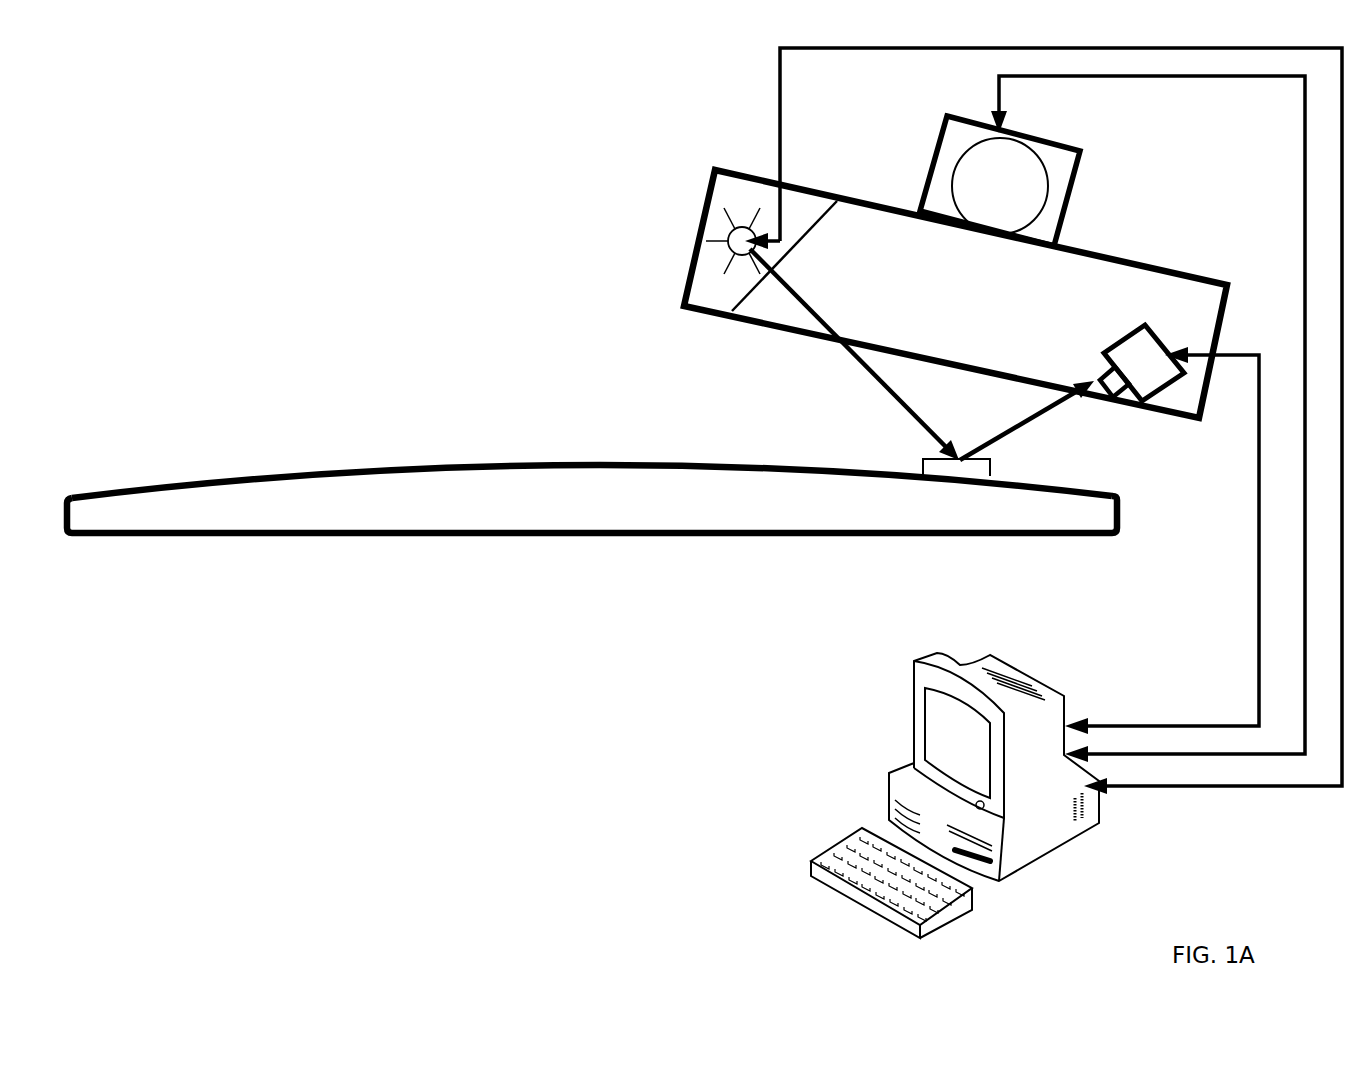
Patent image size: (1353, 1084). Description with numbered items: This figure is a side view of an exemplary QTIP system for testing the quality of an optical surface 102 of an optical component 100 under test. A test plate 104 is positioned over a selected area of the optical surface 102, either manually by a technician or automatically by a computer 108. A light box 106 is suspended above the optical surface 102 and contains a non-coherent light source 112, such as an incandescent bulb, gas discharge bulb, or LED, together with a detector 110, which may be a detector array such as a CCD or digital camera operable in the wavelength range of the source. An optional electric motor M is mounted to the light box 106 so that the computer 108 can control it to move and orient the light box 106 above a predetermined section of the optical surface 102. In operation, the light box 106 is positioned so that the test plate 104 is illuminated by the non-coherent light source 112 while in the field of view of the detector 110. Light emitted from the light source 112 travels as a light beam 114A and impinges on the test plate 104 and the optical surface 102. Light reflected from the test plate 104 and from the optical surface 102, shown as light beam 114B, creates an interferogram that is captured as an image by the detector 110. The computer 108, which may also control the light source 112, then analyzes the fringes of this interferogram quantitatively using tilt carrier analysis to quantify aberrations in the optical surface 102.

The optical component 100 is at (592, 510).
The optical surface 102 is at (592, 472).
The test plate 104 is at (932, 461).
The light box 106 is at (955, 267).
The computer 108 is at (955, 795).
The detector 110 is at (1144, 351).
The non-coherent light source 112 is at (743, 231).
The light beam 114A is at (854, 354).
The light beam 114B is at (1027, 420).